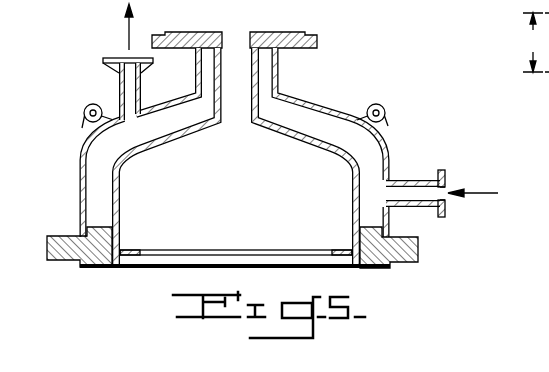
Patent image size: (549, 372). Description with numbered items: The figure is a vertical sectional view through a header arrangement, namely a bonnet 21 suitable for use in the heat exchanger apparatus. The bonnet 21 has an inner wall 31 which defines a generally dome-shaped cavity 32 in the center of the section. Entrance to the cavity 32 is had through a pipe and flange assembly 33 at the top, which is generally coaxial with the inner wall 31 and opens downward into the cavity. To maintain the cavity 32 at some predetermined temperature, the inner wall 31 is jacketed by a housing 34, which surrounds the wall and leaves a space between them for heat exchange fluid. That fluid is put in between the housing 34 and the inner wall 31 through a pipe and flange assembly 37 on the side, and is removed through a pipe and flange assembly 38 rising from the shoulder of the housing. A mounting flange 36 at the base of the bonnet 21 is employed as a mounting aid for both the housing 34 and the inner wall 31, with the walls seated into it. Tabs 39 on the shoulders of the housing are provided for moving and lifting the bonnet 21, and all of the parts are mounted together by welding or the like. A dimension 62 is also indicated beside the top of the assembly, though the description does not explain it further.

The bonnet 21 is at (79, 183).
The inner wall 31 is at (122, 204).
The cavity 32 is at (246, 190).
The pipe and flange assembly 33 is at (258, 77).
The housing 34 is at (383, 140).
The mounting flange 36 is at (97, 264).
The pipe and flange assembly 37 is at (408, 181).
The pipe and flange assembly 38 is at (118, 85).
The tabs 39 is at (84, 108).
The dimension 62 is at (536, 42).